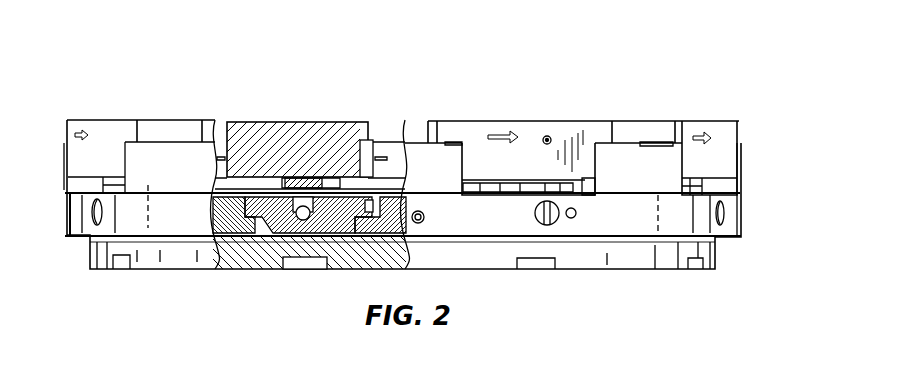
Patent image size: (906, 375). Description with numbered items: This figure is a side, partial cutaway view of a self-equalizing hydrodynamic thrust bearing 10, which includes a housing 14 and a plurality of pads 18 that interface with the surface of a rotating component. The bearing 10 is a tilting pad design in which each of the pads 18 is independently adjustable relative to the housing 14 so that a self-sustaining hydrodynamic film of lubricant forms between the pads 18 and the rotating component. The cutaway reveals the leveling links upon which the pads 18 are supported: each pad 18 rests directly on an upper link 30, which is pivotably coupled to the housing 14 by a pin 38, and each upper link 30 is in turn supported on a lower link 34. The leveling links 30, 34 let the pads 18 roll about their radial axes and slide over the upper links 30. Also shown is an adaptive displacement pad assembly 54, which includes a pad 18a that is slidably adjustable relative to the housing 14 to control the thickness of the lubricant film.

The self-equalizing hydrodynamic thrust bearing 10 is at (755, 56).
The housing 14 is at (742, 227).
The pads 18 is at (82, 150).
The pad 18a is at (588, 128).
The upper links 30 is at (278, 230).
The lower links 34 is at (232, 228).
The pin 38 is at (303, 220).
The adaptive displacement pad assembly 54 is at (480, 90).